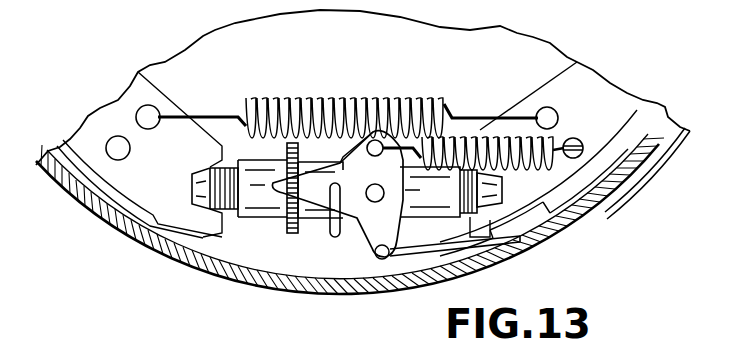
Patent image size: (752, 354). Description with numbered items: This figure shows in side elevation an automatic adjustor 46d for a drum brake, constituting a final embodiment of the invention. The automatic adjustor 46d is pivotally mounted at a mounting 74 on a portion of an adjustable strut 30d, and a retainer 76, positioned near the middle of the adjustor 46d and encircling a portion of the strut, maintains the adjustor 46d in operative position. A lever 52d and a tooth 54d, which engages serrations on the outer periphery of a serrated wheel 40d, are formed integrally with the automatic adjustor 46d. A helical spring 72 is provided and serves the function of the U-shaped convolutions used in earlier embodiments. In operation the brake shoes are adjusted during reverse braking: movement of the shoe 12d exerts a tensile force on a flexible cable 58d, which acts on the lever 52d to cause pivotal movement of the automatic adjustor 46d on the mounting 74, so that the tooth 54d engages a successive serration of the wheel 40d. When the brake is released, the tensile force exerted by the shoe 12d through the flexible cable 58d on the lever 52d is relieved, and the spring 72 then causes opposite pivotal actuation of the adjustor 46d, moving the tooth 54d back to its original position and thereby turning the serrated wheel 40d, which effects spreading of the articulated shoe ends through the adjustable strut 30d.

The shoe 12d is at (613, 143).
The strut 30d is at (443, 207).
The serrated wheel 40d is at (287, 223).
The automatic adjustor 46d is at (390, 160).
The lever 52d is at (373, 194).
The tooth 54d is at (263, 207).
The flexible cable 58d is at (517, 230).
The helical spring 72 is at (473, 133).
The mounting 74 is at (367, 210).
The retainer 76 is at (333, 235).